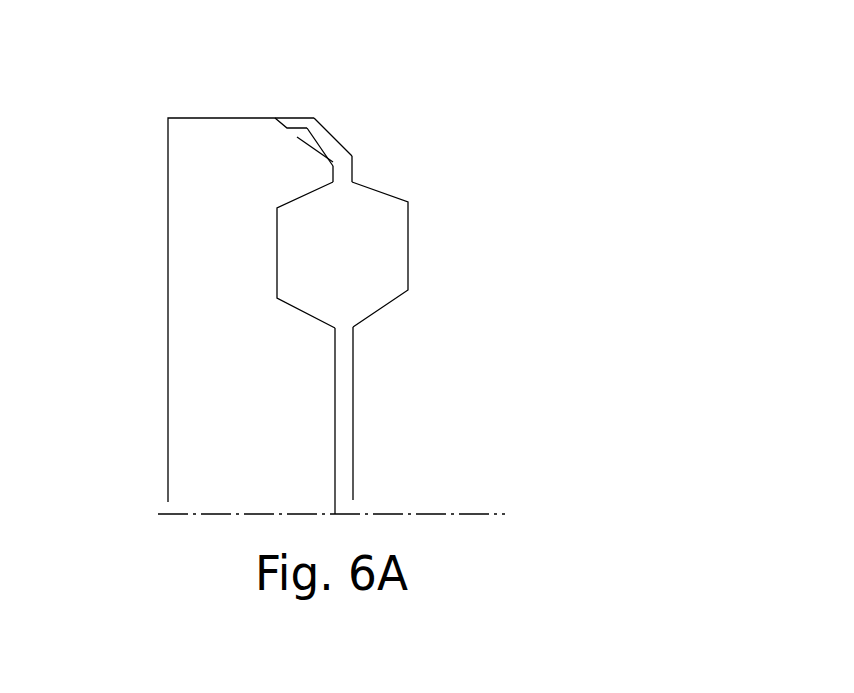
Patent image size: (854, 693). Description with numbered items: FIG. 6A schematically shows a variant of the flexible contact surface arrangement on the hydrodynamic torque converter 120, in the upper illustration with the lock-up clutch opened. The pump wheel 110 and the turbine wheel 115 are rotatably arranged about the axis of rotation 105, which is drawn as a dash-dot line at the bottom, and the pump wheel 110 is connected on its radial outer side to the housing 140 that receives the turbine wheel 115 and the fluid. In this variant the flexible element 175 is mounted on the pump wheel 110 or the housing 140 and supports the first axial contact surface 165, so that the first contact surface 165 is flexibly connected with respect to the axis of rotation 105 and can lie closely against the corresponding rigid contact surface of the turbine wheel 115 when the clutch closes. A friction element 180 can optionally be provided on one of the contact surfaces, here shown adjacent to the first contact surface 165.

The hydrodynamic torque converter 120 is at (451, 76).
The housing 140 is at (168, 346).
The flexible element 175 is at (323, 126).
The first contact surface 165 is at (313, 145).
The friction element 180 is at (347, 158).
The turbine wheel 115 is at (288, 240).
The pump wheel 110 is at (359, 362).
The axis of rotation 105 is at (477, 514).